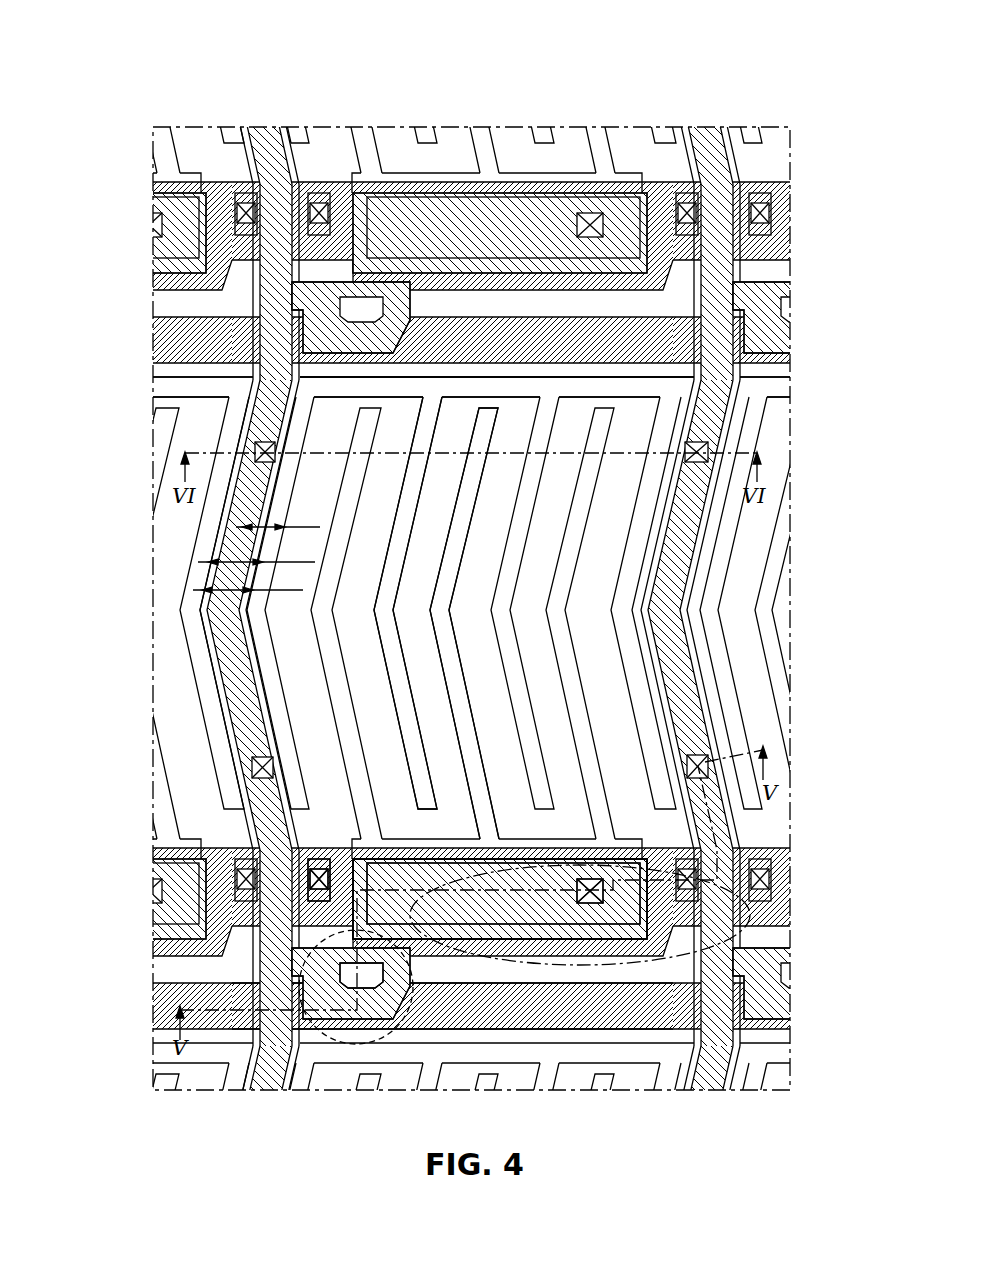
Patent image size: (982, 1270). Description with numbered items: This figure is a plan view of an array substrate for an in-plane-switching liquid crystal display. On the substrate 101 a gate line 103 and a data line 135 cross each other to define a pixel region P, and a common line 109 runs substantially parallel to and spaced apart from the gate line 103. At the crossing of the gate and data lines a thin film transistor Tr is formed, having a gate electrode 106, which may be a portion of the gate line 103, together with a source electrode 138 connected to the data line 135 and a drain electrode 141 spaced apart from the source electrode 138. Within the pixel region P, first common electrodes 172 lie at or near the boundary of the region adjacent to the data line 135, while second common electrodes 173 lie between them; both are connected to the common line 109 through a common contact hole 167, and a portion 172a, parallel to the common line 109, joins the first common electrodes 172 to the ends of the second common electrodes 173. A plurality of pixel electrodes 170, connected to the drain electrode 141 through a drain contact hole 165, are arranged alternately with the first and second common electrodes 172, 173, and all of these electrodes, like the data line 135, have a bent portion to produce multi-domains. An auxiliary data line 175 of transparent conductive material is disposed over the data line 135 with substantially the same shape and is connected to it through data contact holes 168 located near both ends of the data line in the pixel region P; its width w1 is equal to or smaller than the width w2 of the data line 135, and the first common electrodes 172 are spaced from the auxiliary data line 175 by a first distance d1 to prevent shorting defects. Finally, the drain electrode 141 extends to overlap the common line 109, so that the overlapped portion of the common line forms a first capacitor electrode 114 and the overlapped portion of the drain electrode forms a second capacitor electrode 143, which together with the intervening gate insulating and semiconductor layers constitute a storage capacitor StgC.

The substrate 101 is at (593, 108).
The pixel region P is at (464, 396).
The portion of first common electrodes 172a is at (507, 387).
The data contact hole 168 is at (243, 446).
The auxiliary data line 175 is at (214, 520).
The data line 135 is at (203, 533).
The first distance d1 is at (278, 517).
The width of the auxiliary data line w1 is at (257, 552).
The width of the data line w2 is at (252, 580).
The first common electrodes 172 is at (296, 494).
The pixel electrodes 170 is at (325, 626).
The second common electrodes 173 is at (390, 637).
The common line 109 is at (440, 850).
The common contact hole 167 is at (325, 855).
The drain contact hole 165 is at (580, 866).
The drain electrode 141 is at (400, 942).
The first capacitor electrode 114 is at (492, 932).
The thin film transistor Tr is at (373, 1043).
The gate electrode 106 is at (368, 1003).
The source electrode 138 is at (380, 985).
The gate line 103 is at (523, 1013).
The second capacitor electrode 143 is at (556, 933).
The storage capacitor StgC is at (558, 930).